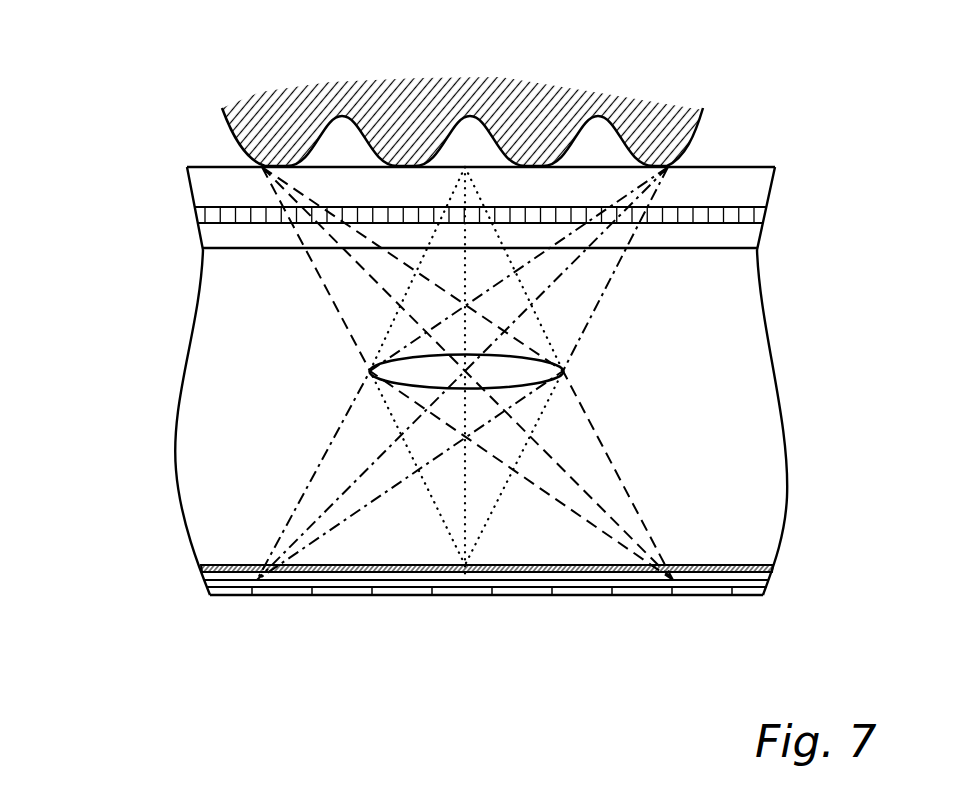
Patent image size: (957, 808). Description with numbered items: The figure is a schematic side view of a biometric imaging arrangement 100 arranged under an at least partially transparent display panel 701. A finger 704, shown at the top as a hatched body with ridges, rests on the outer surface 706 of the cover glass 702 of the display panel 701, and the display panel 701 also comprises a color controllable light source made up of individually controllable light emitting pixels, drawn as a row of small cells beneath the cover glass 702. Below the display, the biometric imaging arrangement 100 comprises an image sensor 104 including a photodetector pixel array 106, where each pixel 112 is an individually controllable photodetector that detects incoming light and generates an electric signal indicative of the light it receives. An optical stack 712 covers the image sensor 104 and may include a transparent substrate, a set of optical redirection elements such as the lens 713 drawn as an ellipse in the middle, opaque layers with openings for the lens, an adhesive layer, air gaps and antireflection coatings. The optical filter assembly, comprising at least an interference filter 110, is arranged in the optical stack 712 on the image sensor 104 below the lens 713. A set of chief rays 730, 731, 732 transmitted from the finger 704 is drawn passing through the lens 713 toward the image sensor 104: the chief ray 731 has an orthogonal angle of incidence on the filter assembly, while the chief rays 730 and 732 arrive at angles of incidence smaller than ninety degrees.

The biometric imaging arrangement 100 is at (180, 248).
The image sensor 104 is at (212, 593).
The photodetector pixel array 106 is at (203, 565).
The interference filter 110 is at (770, 568).
The pixel 112 is at (232, 595).
The display panel 701 is at (163, 216).
The cover glass 702 is at (183, 173).
The finger 704 is at (530, 107).
The outer surface 706 is at (710, 165).
The optical stack 712 is at (800, 248).
The lens 713 is at (372, 370).
The chief ray 730 is at (763, 212).
The chief ray 731 is at (468, 508).
The chief ray 732 is at (741, 212).